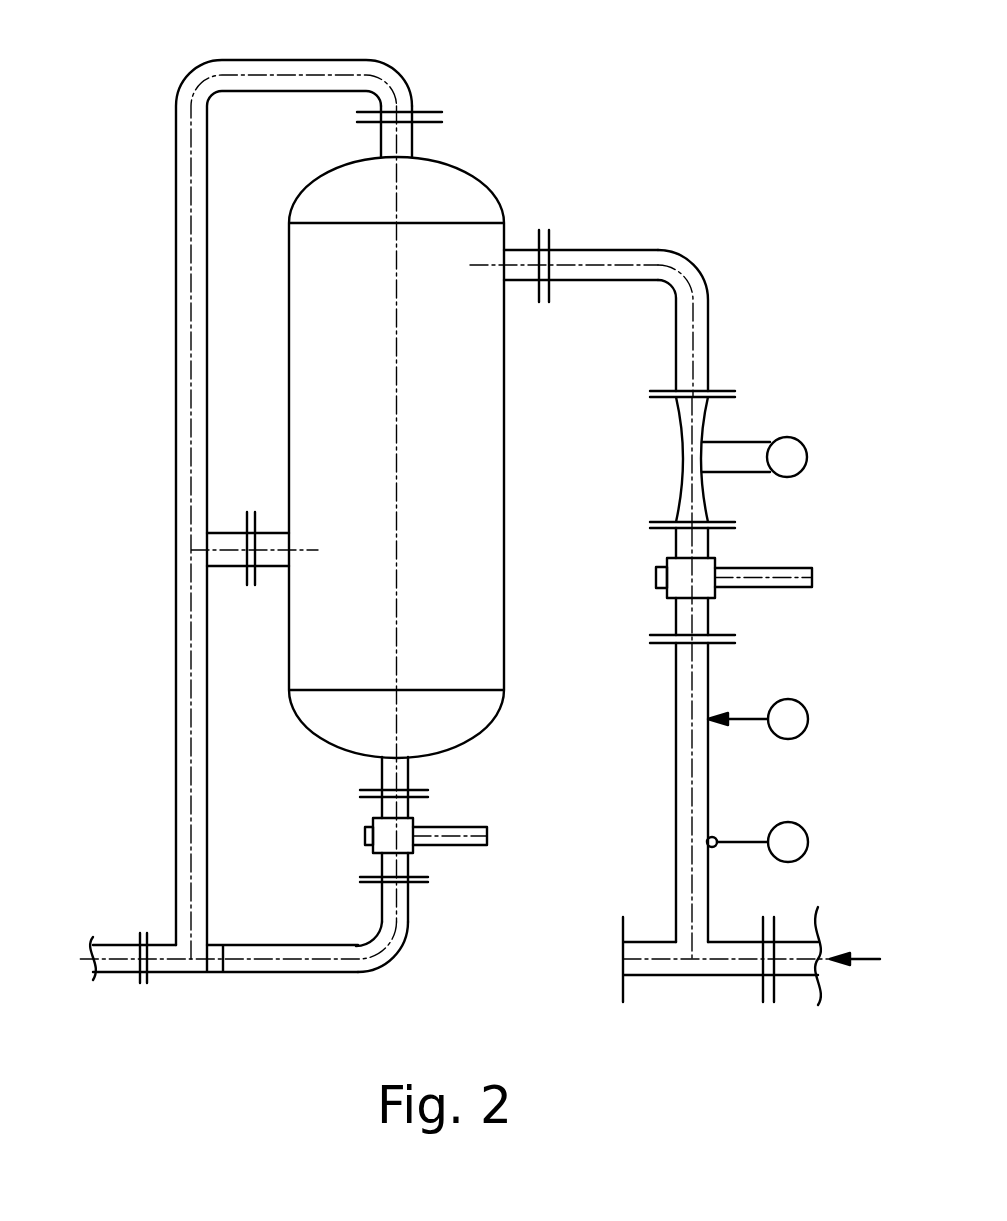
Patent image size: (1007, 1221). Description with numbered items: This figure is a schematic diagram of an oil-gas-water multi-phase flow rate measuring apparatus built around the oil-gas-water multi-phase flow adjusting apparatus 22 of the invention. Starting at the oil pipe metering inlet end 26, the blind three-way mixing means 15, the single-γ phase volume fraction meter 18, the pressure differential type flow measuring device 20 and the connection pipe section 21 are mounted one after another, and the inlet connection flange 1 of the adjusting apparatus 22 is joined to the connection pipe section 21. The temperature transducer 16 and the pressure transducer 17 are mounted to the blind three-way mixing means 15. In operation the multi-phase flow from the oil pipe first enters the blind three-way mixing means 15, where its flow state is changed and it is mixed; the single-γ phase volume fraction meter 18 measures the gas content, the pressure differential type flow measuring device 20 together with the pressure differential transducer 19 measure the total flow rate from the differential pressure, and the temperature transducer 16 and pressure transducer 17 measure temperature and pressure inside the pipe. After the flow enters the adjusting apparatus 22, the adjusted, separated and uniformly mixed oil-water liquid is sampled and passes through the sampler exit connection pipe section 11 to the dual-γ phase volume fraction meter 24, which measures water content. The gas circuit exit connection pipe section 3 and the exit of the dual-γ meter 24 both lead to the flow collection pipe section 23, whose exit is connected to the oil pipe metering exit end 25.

The inlet connection flange 1 is at (550, 230).
The gas circuit exit connection pipe section 3 is at (418, 125).
The sampler exit connection pipe section 11 is at (422, 790).
The blind three-way mixing means 15 is at (695, 908).
The temperature transducer 16 is at (810, 845).
The pressure transducer 17 is at (797, 722).
The single-γ phase volume fraction meter 18 is at (708, 575).
The pressure differential transducer 19 is at (807, 447).
The pressure differential type flow measuring device 20 is at (707, 438).
The connection pipe section 21 is at (690, 273).
The oil-gas-water multi-phase flow adjusting apparatus 22 is at (347, 208).
The flow collection pipe section 23 is at (190, 300).
The dual-γ phase volume fraction meter 24 is at (387, 837).
The oil pipe metering exit end 25 is at (130, 952).
The oil pipe metering inlet end 26 is at (788, 965).